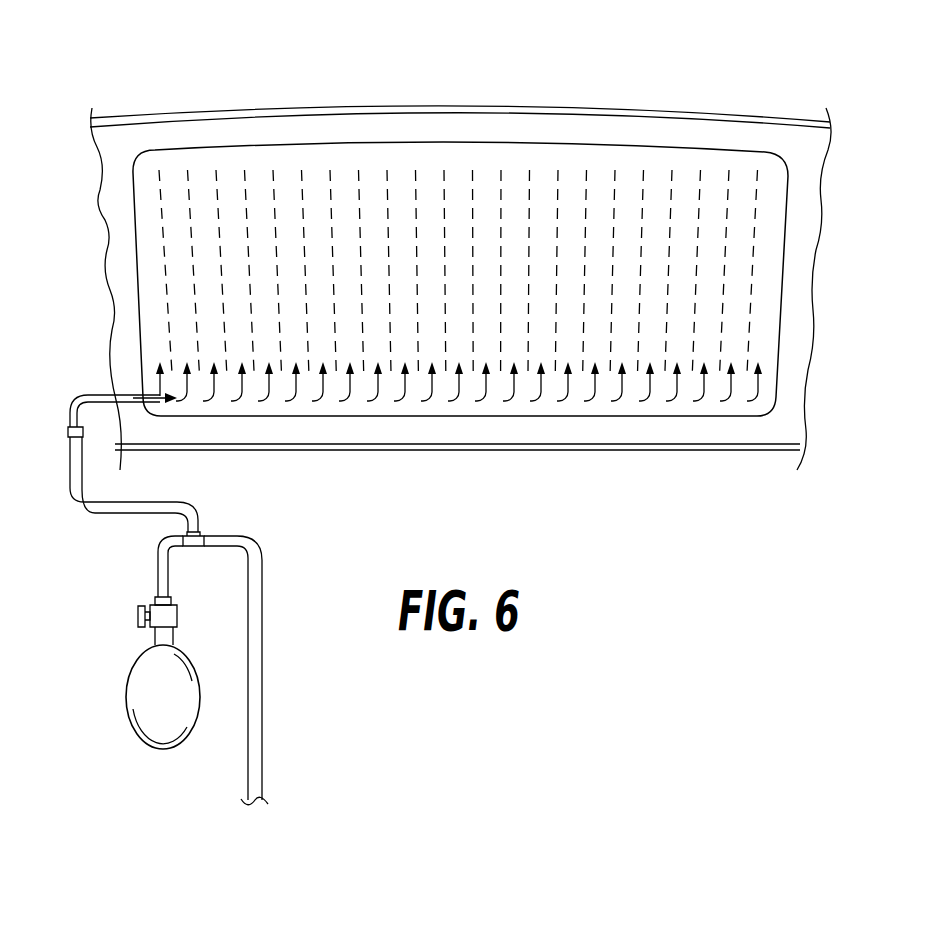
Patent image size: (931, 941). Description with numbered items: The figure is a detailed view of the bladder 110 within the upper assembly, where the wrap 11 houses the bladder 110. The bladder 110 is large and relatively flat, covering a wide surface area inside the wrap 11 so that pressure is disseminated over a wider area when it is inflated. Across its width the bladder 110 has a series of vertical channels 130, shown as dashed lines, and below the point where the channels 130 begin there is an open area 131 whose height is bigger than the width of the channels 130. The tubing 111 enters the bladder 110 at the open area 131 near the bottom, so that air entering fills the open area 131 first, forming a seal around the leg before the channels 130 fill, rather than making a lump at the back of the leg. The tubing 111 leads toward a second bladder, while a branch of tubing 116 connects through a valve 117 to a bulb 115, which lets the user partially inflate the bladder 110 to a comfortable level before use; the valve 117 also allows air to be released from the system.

The wrap 11 is at (143, 135).
The bladder 110 is at (603, 155).
The vertical channels 130 is at (343, 170).
The open area 131 is at (470, 390).
The tubing 111 is at (255, 667).
The bulb 115 is at (152, 703).
The tubing 116 is at (163, 570).
The valve 117 is at (140, 615).